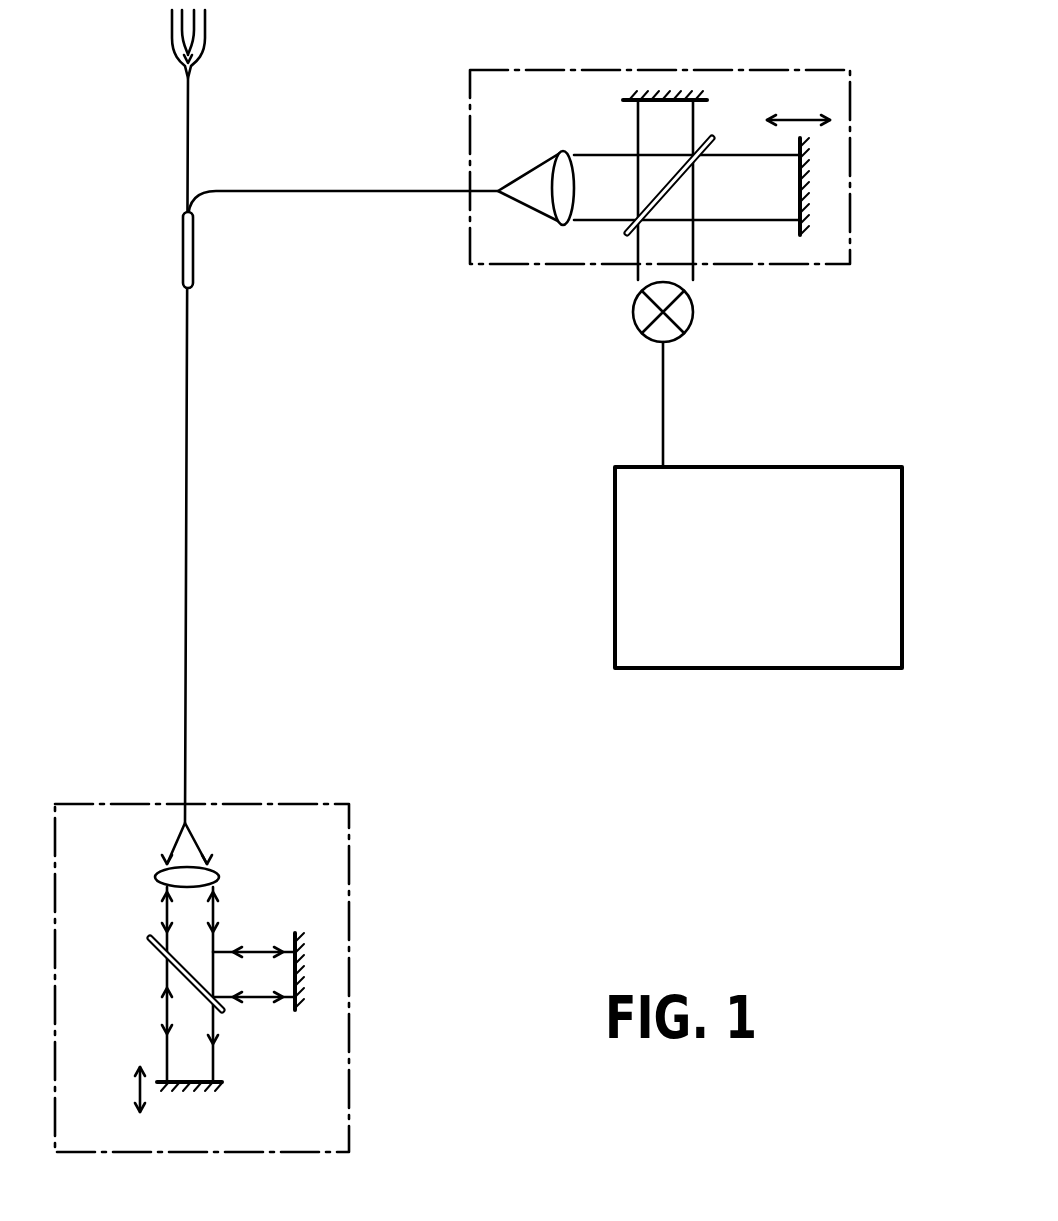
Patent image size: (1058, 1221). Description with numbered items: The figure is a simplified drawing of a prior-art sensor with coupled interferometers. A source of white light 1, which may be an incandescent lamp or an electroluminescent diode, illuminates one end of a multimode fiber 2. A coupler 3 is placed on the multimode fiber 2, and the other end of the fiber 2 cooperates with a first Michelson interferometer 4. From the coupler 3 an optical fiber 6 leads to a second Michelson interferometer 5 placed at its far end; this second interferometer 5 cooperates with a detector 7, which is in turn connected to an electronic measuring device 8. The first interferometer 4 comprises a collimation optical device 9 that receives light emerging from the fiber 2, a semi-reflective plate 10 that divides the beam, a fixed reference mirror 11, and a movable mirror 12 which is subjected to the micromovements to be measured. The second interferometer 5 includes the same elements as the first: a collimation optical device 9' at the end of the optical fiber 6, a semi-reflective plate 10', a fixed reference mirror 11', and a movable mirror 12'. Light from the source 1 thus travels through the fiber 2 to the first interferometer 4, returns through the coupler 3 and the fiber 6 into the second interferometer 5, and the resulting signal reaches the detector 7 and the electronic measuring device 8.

The source of white light 1 is at (206, 48).
The multimode fiber 2 is at (188, 460).
The coupler 3 is at (194, 258).
The Michelson interferometer 4 is at (349, 893).
The second Michelson interferometer 5 is at (760, 71).
The optical fiber 6 is at (375, 193).
The detector 7 is at (693, 312).
The electronic measuring device 8 is at (790, 467).
The collimation optical device 9 is at (223, 828).
The collimation optical device 9' is at (536, 231).
The semi-reflective plate 10 is at (150, 886).
The semi-reflective plate 10' is at (623, 120).
The fixed reference mirror 11 is at (357, 971).
The fixed reference mirror 11' is at (675, 62).
The movable mirror 12 is at (277, 1073).
The movable mirror 12' is at (838, 175).